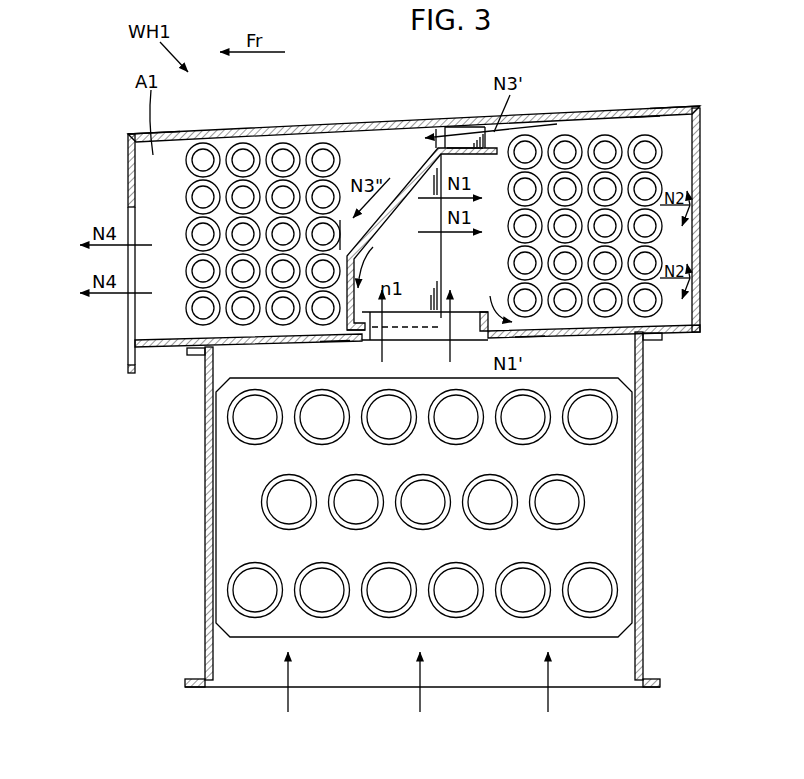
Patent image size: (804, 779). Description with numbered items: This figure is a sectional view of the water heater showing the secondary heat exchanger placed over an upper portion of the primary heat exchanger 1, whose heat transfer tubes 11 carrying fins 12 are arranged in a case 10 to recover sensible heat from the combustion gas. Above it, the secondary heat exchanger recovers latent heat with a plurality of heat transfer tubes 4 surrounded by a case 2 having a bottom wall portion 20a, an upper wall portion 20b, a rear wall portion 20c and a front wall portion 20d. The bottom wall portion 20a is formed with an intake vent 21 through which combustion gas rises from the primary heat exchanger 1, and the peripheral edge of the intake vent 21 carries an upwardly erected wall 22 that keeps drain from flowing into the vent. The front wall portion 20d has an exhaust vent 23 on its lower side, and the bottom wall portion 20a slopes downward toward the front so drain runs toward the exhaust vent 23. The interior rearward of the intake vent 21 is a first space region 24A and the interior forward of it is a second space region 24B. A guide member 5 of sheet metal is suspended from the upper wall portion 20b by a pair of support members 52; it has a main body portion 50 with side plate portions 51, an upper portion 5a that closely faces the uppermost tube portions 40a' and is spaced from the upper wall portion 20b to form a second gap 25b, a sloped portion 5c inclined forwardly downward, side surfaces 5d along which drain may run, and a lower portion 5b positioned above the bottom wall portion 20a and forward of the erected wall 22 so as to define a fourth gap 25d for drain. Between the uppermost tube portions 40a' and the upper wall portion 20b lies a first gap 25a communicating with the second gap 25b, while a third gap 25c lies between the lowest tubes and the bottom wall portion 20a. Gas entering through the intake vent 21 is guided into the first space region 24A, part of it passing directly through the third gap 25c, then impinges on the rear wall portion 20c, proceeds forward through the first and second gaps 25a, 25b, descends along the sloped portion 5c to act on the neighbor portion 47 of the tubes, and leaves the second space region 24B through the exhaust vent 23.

The primary heat exchanger 1 is at (645, 408).
The case 2 is at (193, 132).
The heat transfer tubes 4 is at (233, 143).
The guide member 5 is at (425, 152).
The upper portion 5a is at (478, 150).
The lower portion 5b is at (345, 326).
The sloped portion 5c is at (418, 172).
The side surfaces 5d is at (431, 284).
The case 10 is at (643, 628).
The heat transfer tubes 11 is at (268, 522).
The fins 12 is at (483, 625).
The bottom wall portion 20a is at (257, 346).
The upper wall portion 20b is at (363, 124).
The rear wall portion 20c is at (700, 180).
The front wall portion 20d is at (128, 182).
The intake vent 21 is at (408, 334).
The erected wall 22 is at (480, 312).
The exhaust vent 23 is at (128, 220).
The first space region 24A is at (668, 115).
The second space region 24B is at (146, 152).
The first gap 25a is at (645, 110).
The second gap 25b is at (442, 140).
The third gap 25c is at (530, 322).
The fourth gap 25d is at (337, 342).
The uppermost tube portions 40a' is at (585, 158).
The neighbor portion 47 is at (338, 214).
The main body portion 50 is at (424, 162).
The side plate portions 51 is at (442, 253).
The support members 52 is at (462, 140).